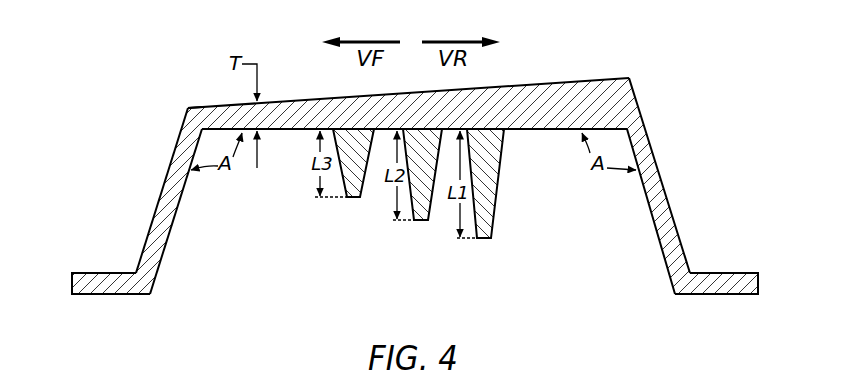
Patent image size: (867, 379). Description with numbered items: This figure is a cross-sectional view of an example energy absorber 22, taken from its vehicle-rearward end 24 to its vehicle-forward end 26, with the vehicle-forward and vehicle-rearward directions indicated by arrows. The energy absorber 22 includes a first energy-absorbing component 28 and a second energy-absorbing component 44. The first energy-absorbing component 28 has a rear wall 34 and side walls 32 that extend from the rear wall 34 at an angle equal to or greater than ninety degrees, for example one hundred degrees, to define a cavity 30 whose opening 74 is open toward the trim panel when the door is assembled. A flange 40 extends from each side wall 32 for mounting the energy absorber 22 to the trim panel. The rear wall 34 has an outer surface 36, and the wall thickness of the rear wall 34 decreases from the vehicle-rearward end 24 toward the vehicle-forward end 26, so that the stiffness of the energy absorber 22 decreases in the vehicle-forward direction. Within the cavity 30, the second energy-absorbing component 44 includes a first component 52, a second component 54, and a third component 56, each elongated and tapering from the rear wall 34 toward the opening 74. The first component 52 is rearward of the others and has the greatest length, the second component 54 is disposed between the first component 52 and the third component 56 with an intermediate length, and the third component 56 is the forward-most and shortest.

The energy absorber 22 is at (705, 63).
The vehicle-rearward end 24 is at (665, 190).
The vehicle-forward end 26 is at (160, 188).
The first energy-absorbing component 28 is at (187, 106).
The cavity 30 is at (345, 265).
The side walls 32 is at (176, 215).
The rear wall 34 is at (280, 133).
The outer surface 36 is at (535, 82).
The flange 40 is at (92, 267).
The second energy-absorbing component 44 is at (353, 204).
The first component 52 is at (500, 170).
The second component 54 is at (432, 188).
The third component 56 is at (366, 168).
The opening 74 is at (222, 278).